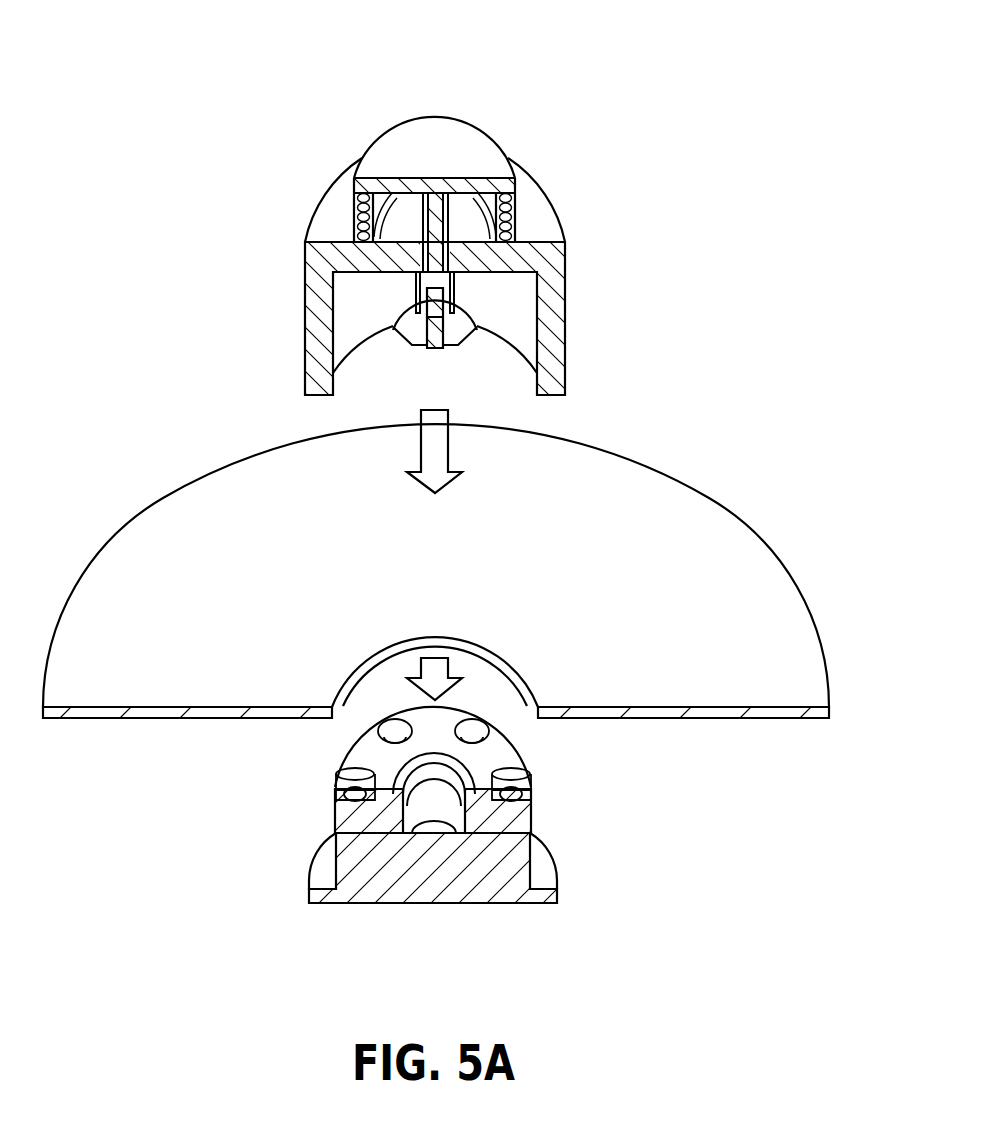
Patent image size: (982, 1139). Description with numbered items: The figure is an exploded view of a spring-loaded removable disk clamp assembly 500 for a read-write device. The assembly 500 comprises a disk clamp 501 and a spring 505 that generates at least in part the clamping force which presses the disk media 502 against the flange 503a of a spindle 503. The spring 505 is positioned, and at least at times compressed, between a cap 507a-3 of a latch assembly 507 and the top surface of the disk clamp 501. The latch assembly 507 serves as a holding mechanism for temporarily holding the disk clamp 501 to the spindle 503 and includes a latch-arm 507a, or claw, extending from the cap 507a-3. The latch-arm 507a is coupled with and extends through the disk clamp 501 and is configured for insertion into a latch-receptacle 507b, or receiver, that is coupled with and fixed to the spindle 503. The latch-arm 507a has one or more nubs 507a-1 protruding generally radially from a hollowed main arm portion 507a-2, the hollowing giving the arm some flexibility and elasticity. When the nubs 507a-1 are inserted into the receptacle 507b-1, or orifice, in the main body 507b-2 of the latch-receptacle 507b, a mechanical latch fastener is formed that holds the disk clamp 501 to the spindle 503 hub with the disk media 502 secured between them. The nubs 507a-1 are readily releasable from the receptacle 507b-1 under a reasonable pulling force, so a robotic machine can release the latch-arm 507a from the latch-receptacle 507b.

The spring-loaded removable disk clamp assembly 500 is at (314, 58).
The disk clamp 501 is at (318, 318).
The disk media 502 is at (763, 691).
The spindle 503 is at (449, 892).
The flange 503a is at (324, 908).
The spring 505 is at (510, 222).
The latch assembly 507 is at (463, 130).
The latch-arm 507a is at (438, 262).
The nubs 507a-1 is at (412, 335).
The hollowed main arm portion 507a-2 is at (452, 281).
The cap 507a-3 is at (413, 132).
The latch-receptacle 507b is at (508, 760).
The receptacle 507b-1 is at (432, 800).
The main body 507b-2 is at (438, 725).